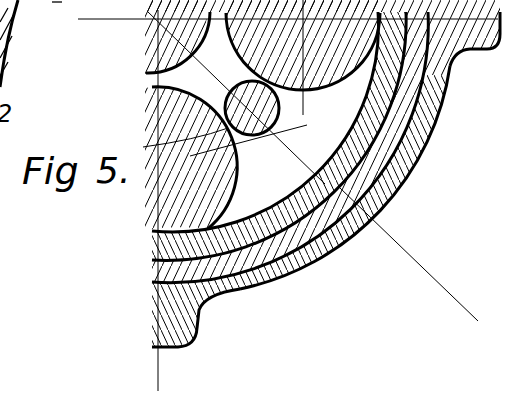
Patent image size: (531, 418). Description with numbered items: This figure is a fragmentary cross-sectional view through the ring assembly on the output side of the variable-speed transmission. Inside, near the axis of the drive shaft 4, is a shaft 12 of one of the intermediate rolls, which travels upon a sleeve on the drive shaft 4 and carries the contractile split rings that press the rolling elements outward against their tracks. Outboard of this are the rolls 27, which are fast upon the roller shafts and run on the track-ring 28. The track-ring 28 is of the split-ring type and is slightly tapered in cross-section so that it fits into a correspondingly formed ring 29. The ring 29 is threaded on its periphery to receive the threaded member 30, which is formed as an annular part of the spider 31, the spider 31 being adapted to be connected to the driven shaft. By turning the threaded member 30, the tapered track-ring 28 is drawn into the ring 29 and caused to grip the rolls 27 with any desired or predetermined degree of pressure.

The drive shaft 4 is at (167, 39).
The shaft of intermediate roll 12 is at (127, 160).
The roll 27 is at (331, 77).
The track-ring 28 is at (314, 263).
The ring 29 is at (353, 234).
The threaded member 30 is at (388, 198).
The spider 31 is at (186, 326).